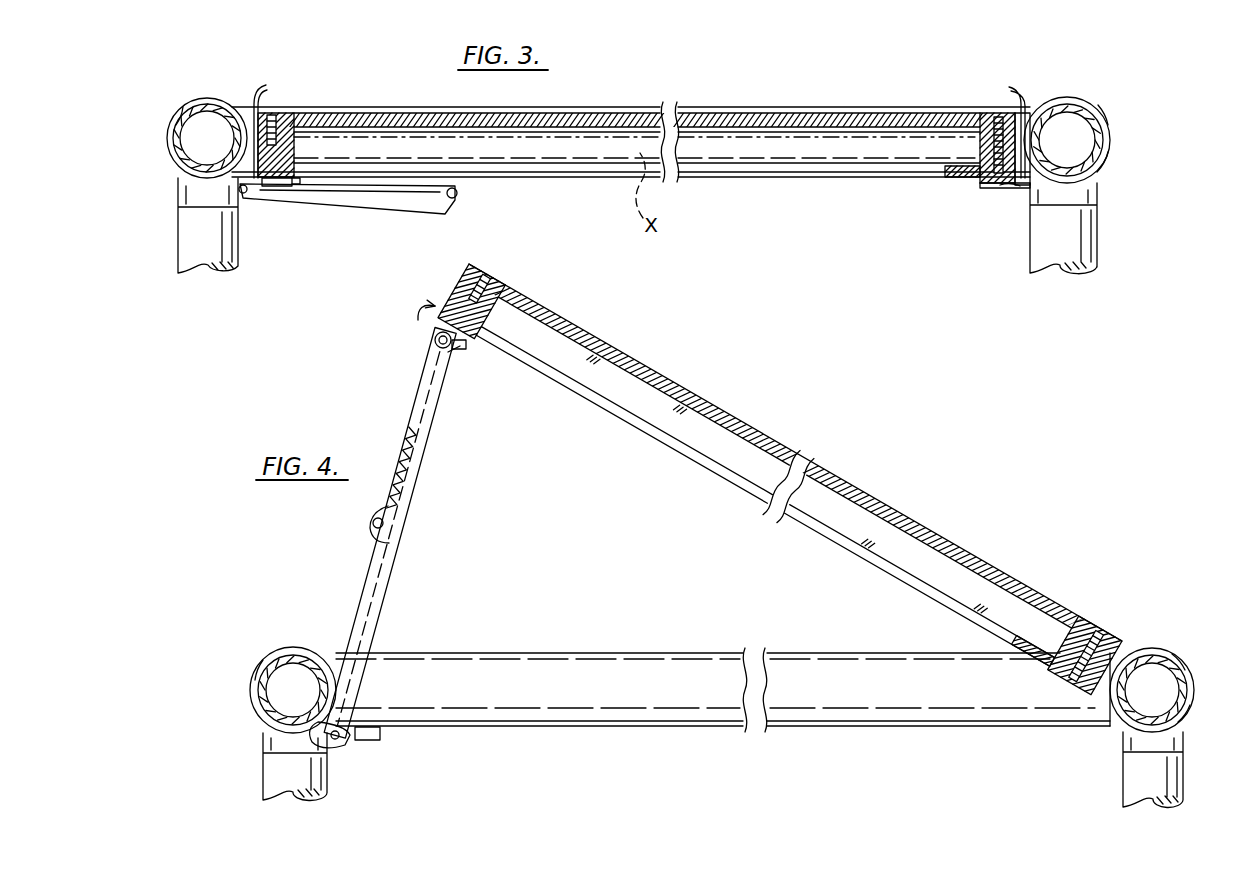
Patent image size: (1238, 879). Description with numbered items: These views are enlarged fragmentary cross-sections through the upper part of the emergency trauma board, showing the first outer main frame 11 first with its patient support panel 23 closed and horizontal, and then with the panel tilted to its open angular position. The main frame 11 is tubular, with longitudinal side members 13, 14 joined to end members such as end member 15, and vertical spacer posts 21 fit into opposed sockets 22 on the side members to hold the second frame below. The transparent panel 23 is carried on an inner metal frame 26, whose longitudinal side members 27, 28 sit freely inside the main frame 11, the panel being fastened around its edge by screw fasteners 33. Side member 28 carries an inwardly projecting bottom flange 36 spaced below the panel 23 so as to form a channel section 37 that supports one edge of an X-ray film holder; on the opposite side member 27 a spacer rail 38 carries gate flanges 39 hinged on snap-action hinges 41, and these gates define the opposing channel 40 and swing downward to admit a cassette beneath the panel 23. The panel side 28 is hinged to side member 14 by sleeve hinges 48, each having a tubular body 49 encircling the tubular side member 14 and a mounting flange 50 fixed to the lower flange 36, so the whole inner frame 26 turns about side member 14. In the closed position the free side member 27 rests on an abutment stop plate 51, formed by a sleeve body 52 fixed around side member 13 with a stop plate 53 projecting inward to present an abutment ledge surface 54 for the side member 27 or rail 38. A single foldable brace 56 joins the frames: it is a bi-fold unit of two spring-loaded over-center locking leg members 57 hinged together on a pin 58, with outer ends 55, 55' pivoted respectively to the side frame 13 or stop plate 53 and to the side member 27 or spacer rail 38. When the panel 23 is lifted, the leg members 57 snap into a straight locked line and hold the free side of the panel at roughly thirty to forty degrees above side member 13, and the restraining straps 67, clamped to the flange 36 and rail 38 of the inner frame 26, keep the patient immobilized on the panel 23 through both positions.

In FIG. 3, the first outer main frame 11 is at (845, 92).
In FIG. 4, the first outer main frame 11 is at (1053, 507).
In FIG. 3, the longitudinal side member 13 is at (195, 104).
In FIG. 4, the longitudinal side member 13 is at (274, 662).
In FIG. 3, the longitudinal side member 14 is at (1094, 112).
In FIG. 4, the longitudinal side member 14 is at (1194, 687).
In FIG. 3, the end member 15 is at (745, 108).
In FIG. 4, the end member 15 is at (781, 718).
In FIG. 3, the spacer post 21 is at (203, 272).
In FIG. 4, the spacer post 21 is at (324, 778).
In FIG. 3, the socket 22 is at (188, 193).
In FIG. 4, the socket 22 is at (264, 746).
In FIG. 3, the patient support panel 23 is at (611, 102).
In FIG. 3, the inner frame 26 is at (973, 148).
In FIG. 4, the inner frame 26 is at (1100, 608).
In FIG. 3, the longitudinal side member 27 is at (310, 126).
In FIG. 3, the longitudinal side member 28 is at (1030, 115).
In FIG. 3, the screw fastener 33 is at (273, 116).
In FIG. 3, the bottom flange 36 is at (948, 170).
In FIG. 3, the channel section 37 is at (953, 140).
In FIG. 4, the channel section 37 is at (1052, 640).
In FIG. 3, the spacer rail 38 is at (251, 191).
In FIG. 4, the spacer rail 38 is at (434, 329).
In FIG. 3, the gate flange 39 is at (303, 147).
In FIG. 3, the channel 40 is at (324, 128).
In FIG. 4, the snap-action hinge 41 is at (466, 347).
In FIG. 3, the sleeve hinge 48 is at (1108, 133).
In FIG. 4, the sleeve hinge 48 is at (1181, 653).
In FIG. 3, the tubular body 49 is at (1110, 156).
In FIG. 4, the tubular body 49 is at (1188, 710).
In FIG. 3, the mounting flange 50 is at (1028, 189).
In FIG. 4, the mounting flange 50 is at (1107, 721).
In FIG. 3, the stop plate 51 is at (164, 156).
In FIG. 4, the stop plate 51 is at (253, 713).
In FIG. 3, the sleeve body 52 is at (176, 116).
In FIG. 4, the sleeve body 52 is at (252, 696).
In FIG. 3, the stop plate 53 is at (277, 182).
In FIG. 4, the stop plate 53 is at (370, 731).
In FIG. 3, the abutment ledge surface 54 is at (294, 180).
In FIG. 4, the abutment ledge surface 54 is at (381, 716).
In FIG. 3, the outer end 55 is at (186, 230).
In FIG. 4, the outer end 55 is at (368, 761).
In FIG. 4, the outer end 55' is at (463, 383).
In FIG. 3, the foldable brace 56 is at (439, 220).
In FIG. 4, the foldable brace 56 is at (405, 549).
In FIG. 3, the locking leg member 57 is at (404, 193).
In FIG. 4, the locking leg member 57 is at (371, 540).
In FIG. 3, the pin 58 is at (458, 195).
In FIG. 4, the pin 58 is at (388, 523).
In FIG. 3, the flexible strap 67 is at (262, 86).
In FIG. 4, the flexible strap 67 is at (422, 315).